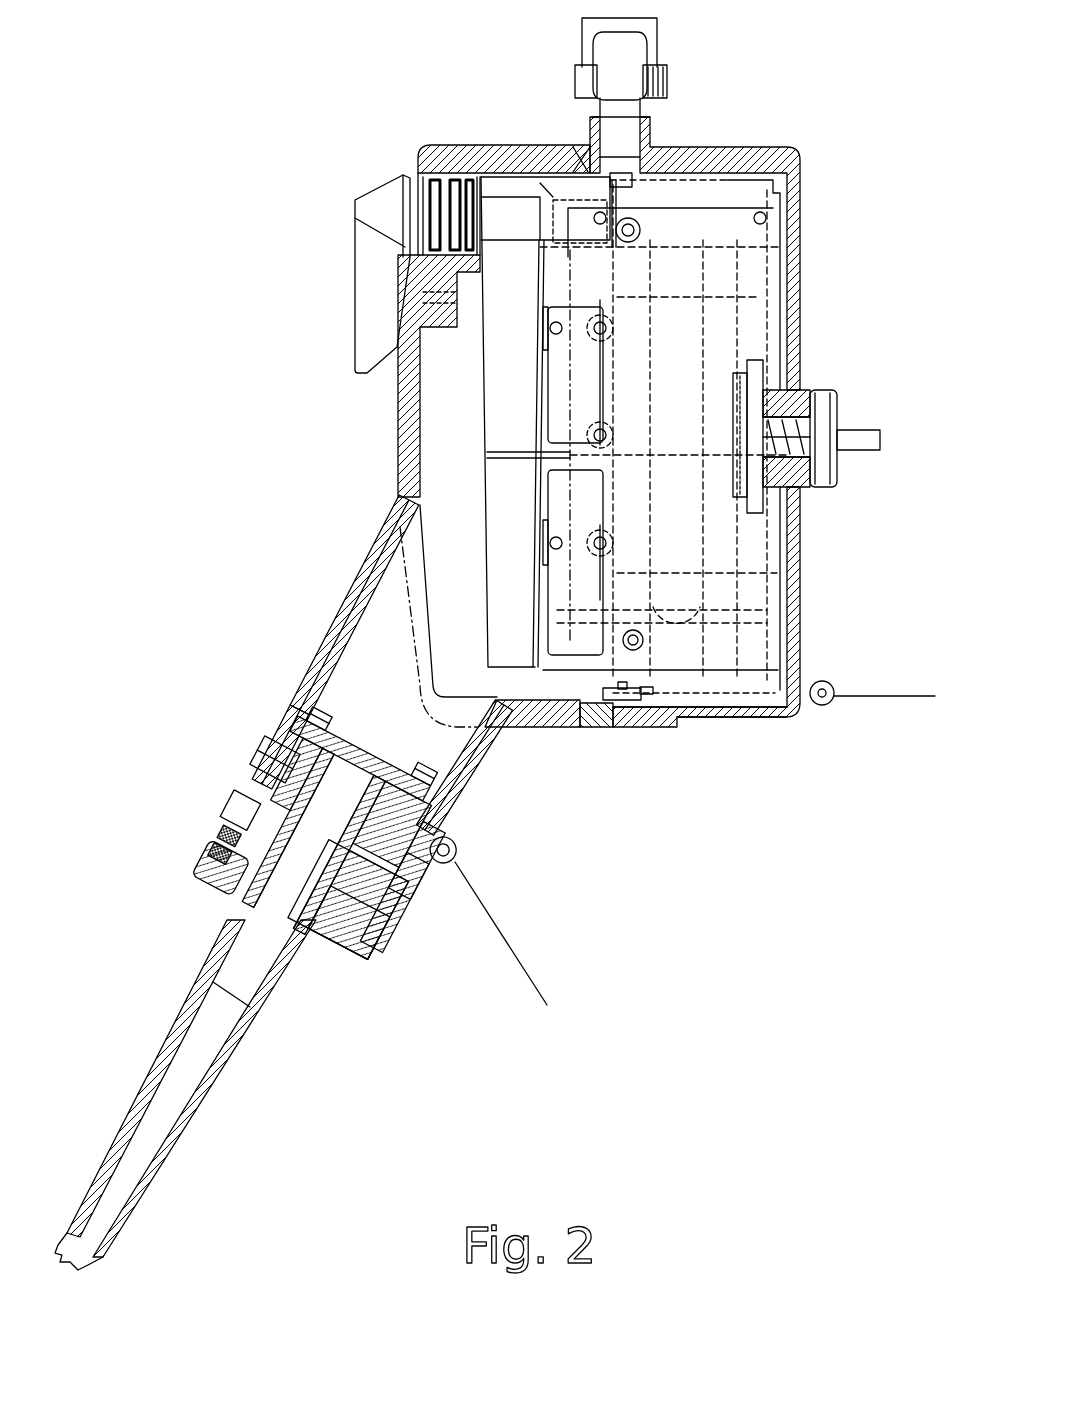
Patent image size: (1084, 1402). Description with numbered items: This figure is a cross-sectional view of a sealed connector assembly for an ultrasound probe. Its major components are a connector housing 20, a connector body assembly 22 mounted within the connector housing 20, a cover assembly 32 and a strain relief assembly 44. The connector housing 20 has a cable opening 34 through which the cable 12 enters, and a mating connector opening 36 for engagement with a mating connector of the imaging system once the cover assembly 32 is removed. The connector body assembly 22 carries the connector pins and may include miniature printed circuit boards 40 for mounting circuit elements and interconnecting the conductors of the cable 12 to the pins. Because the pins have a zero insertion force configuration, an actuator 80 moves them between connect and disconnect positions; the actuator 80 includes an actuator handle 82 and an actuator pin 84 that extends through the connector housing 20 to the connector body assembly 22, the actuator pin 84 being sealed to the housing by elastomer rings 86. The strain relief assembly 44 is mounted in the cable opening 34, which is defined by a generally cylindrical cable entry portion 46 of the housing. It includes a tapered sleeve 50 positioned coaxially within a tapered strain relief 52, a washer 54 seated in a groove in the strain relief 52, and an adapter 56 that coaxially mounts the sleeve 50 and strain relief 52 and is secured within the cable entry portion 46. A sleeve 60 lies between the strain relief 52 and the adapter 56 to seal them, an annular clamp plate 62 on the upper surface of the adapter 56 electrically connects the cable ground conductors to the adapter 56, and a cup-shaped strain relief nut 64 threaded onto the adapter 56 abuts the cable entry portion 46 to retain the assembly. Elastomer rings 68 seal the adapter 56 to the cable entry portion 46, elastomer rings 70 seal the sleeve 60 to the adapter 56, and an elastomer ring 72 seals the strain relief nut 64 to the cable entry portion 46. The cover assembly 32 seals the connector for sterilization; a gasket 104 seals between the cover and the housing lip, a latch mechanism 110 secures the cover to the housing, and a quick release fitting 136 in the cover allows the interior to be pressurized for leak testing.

The cable 12 is at (180, 1095).
The connector housing 20 is at (400, 415).
The connector body assembly 22 is at (738, 690).
The cover assembly 32 is at (805, 299).
The cable opening 34 is at (334, 667).
The mating connector opening 36 is at (607, 698).
The miniature printed circuit boards 40 is at (487, 395).
The strain relief assembly 44 is at (331, 864).
The cable entry portion 46 is at (288, 698).
The tapered sleeve 50 is at (297, 963).
The strain relief 52 is at (223, 1083).
The washer 54 is at (412, 877).
The adapter 56 is at (450, 819).
The sleeve 60 is at (378, 932).
The annular clamp plate 62 is at (413, 777).
The strain relief nut 64 is at (213, 880).
The elastomer rings 68 is at (262, 768).
The elastomer rings 70 is at (217, 857).
The elastomer ring 72 is at (227, 810).
The actuator 80 is at (340, 274).
The actuator handle 82 is at (350, 248).
The actuator pin 84 is at (518, 213).
The elastomer rings 86 is at (452, 147).
The gasket 104 is at (610, 733).
The latch mechanism 110 is at (808, 497).
The quick release fitting 136 is at (650, 47).